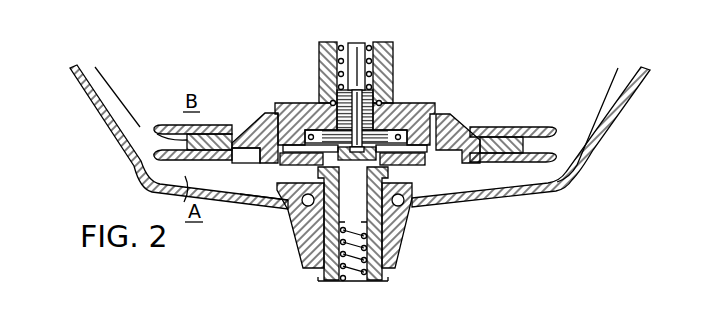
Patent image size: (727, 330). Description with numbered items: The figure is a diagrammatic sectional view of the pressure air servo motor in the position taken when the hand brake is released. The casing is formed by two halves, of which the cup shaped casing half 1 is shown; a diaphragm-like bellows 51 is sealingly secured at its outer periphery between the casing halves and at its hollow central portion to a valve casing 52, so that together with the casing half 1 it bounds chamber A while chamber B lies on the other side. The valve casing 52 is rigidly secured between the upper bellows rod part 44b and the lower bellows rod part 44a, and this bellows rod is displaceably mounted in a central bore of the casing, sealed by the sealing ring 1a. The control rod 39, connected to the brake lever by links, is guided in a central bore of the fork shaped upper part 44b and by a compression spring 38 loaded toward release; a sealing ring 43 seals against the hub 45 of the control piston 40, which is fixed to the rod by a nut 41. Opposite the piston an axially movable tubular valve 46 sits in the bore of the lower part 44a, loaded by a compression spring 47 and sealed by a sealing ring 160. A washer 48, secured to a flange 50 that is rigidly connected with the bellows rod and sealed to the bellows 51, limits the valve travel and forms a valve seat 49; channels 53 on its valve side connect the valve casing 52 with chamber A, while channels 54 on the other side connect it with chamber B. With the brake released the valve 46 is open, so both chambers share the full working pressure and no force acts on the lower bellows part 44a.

The casing half 1 is at (616, 112).
The sealing ring 1a is at (412, 212).
The compression spring 38 is at (367, 53).
The control rod 39 is at (358, 72).
The control piston 40 is at (392, 125).
The nut 41 is at (357, 160).
The sealing ring 43 is at (330, 100).
The lower bellows rod part 44a is at (386, 272).
The upper bellows rod part 44b is at (326, 52).
The hub 45 is at (333, 106).
The tubular valve 46 is at (345, 190).
The compression spring 47 is at (326, 276).
The washer 48 is at (283, 172).
The valve seat 49 is at (310, 207).
The flange 50 is at (266, 116).
The bellows 51 is at (112, 86).
The valve casing 52 is at (478, 128).
The channels 53 is at (265, 197).
The channels 54 is at (448, 110).
The sealing ring 160 is at (318, 235).